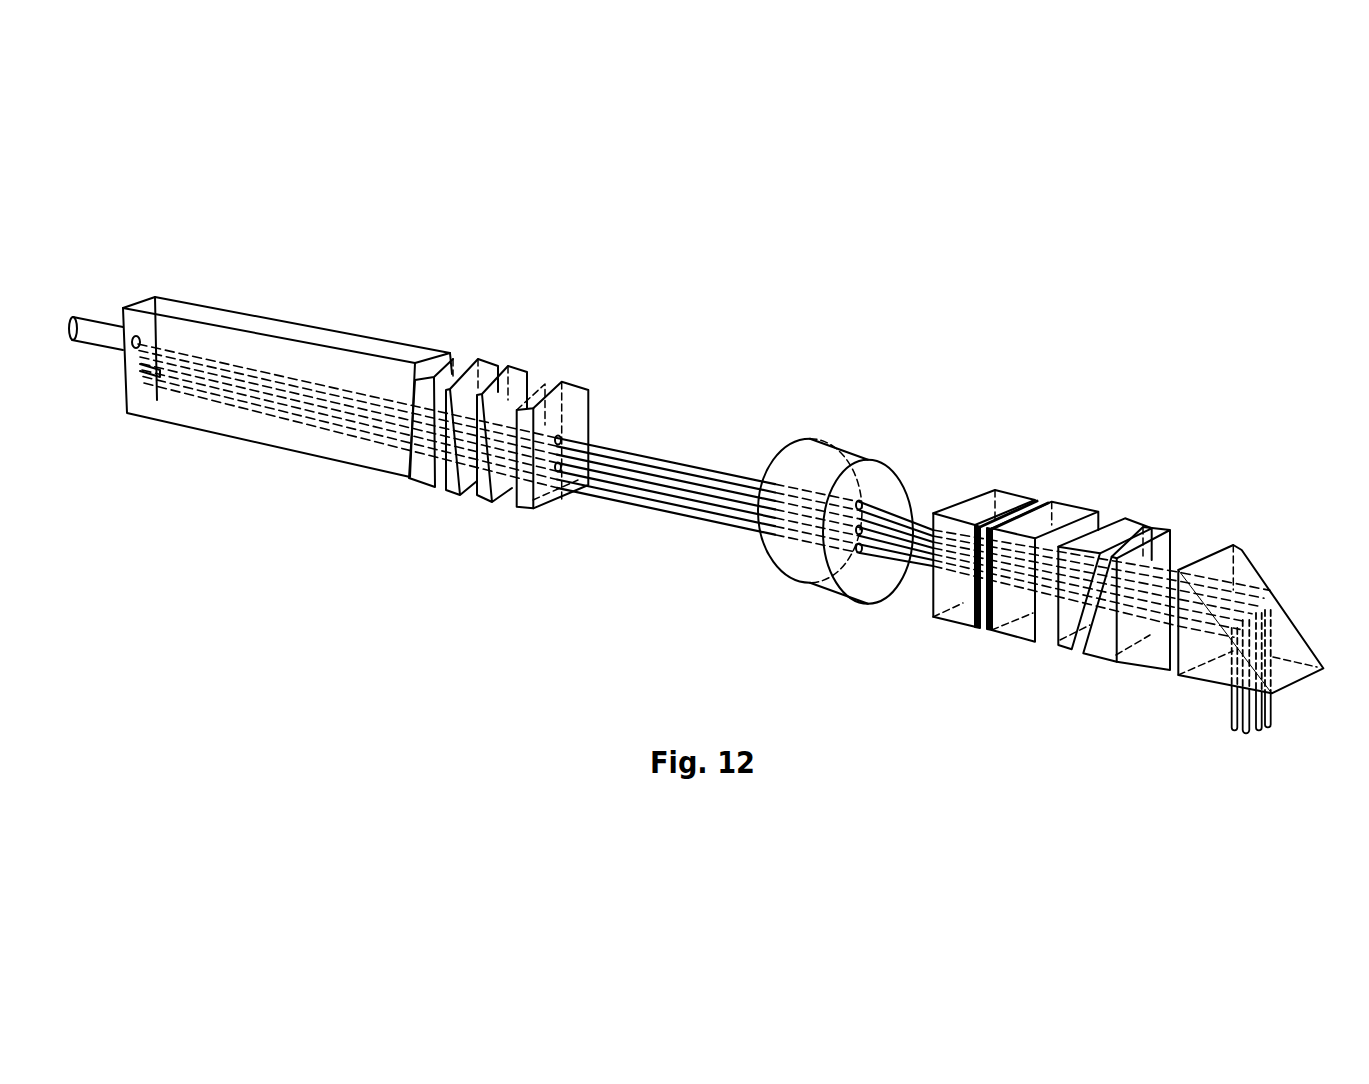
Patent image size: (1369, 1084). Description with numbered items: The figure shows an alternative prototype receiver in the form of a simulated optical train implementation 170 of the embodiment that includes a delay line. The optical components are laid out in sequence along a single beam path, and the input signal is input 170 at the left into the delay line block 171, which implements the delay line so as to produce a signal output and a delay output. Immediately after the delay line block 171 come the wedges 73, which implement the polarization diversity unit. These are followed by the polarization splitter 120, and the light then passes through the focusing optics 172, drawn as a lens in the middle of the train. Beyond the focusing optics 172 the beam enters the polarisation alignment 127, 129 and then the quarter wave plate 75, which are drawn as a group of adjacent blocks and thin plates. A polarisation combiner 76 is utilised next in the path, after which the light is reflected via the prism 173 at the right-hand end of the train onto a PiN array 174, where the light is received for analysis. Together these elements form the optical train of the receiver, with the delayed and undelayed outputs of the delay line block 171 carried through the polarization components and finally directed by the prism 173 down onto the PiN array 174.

The simulated optical train implementation 170 is at (122, 330).
The delay line block 171 is at (308, 322).
The wedges 73 is at (540, 365).
The polarization splitter 120 is at (542, 367).
The focusing optics 172 is at (822, 593).
The polarisation alignment 127 is at (1063, 516).
The polarisation alignment 129 is at (1067, 472).
The quarter wave plate 75 is at (1106, 511).
The polarisation combiner 76 is at (1127, 513).
The prism 173 is at (1278, 598).
The PiN array 174 is at (1223, 715).